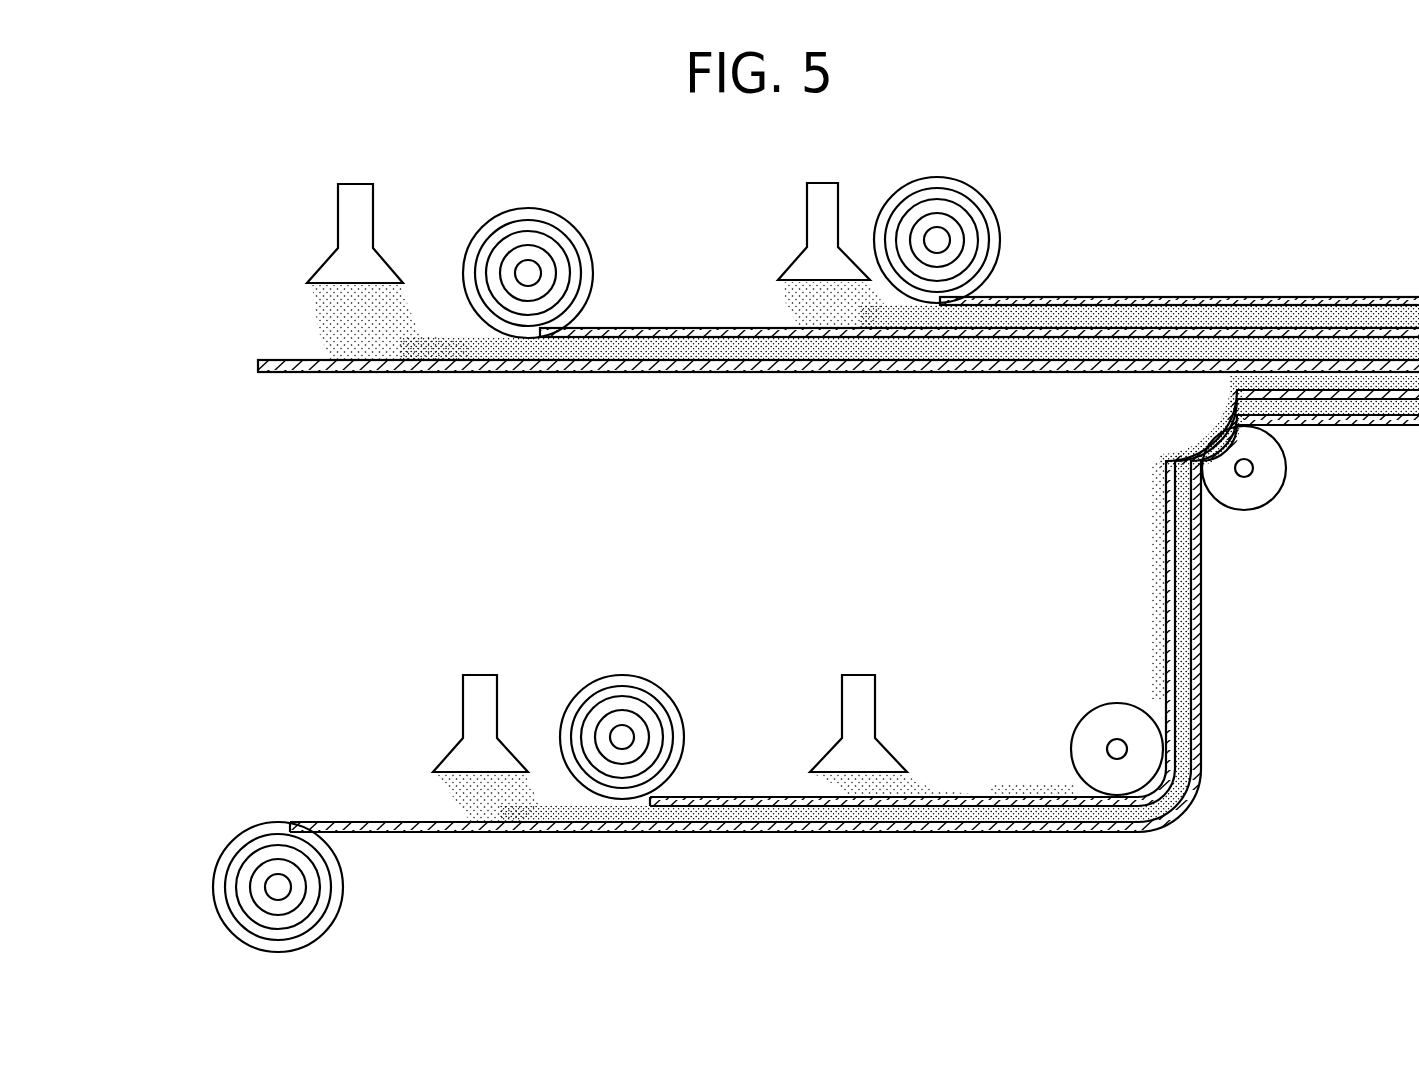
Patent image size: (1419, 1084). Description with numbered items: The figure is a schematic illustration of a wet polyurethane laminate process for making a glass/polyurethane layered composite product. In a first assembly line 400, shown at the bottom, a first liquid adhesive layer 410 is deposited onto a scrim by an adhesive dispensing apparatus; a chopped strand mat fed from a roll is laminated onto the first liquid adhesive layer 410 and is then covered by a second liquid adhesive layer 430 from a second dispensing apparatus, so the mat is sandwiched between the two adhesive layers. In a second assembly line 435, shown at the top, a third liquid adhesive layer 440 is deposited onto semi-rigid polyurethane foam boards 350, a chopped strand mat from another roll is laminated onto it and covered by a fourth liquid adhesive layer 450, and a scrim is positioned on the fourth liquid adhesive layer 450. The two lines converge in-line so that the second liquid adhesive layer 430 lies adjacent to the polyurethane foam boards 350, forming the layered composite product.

The polyurethane foam boards 350 is at (258, 363).
The first assembly line 400 is at (247, 763).
The first liquid adhesive layer 410 is at (430, 801).
The second liquid adhesive layer 430 is at (809, 781).
The second assembly line 435 is at (204, 250).
The third liquid adhesive layer 440 is at (305, 320).
The fourth liquid adhesive layer 450 is at (775, 306).